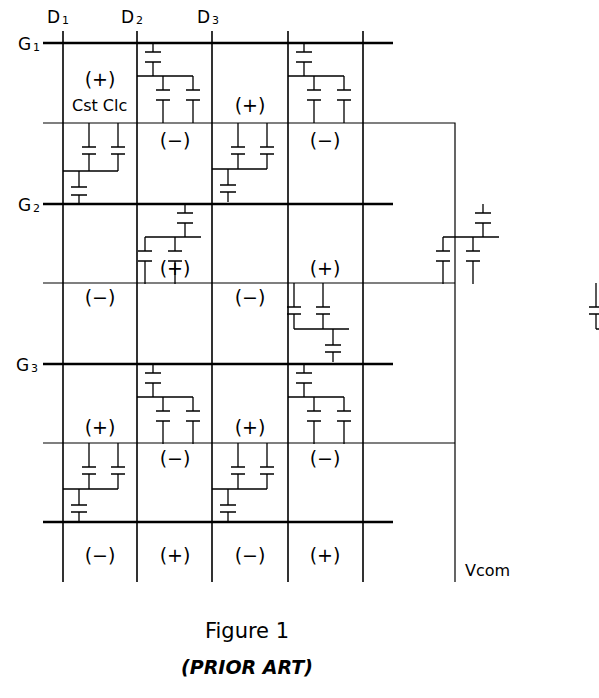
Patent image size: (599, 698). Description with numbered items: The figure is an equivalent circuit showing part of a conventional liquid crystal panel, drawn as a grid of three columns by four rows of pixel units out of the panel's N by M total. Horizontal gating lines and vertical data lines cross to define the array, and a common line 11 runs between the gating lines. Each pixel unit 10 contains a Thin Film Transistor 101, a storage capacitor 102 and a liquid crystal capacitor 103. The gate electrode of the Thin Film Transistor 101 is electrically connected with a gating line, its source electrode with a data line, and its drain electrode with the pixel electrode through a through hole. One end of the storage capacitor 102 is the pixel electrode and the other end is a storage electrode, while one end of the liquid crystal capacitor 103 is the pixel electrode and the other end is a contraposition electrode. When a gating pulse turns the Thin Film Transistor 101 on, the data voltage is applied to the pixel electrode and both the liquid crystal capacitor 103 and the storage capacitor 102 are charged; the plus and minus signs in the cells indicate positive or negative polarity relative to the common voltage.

The pixel unit 10 is at (75, 163).
The common line 11 is at (455, 123).
The Thin Film Transistor 101 is at (72, 190).
The storage capacitor 102 is at (84, 153).
The liquid crystal capacitor 103 is at (119, 157).